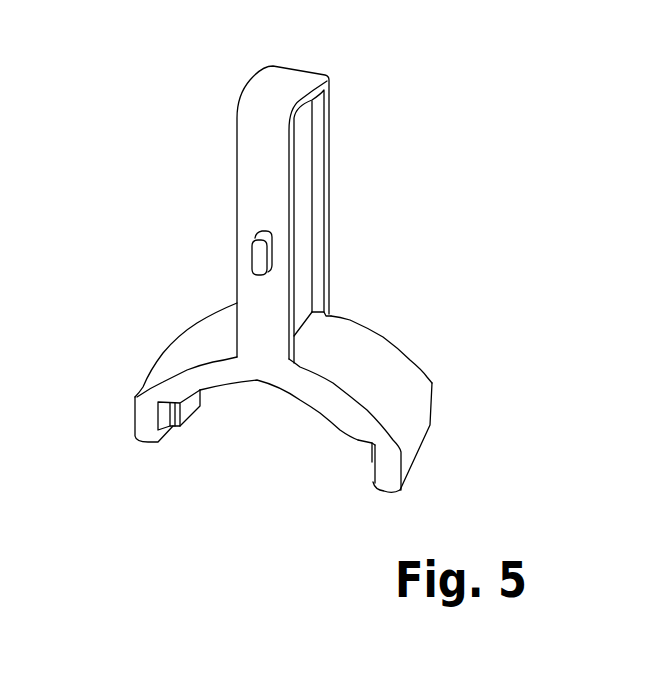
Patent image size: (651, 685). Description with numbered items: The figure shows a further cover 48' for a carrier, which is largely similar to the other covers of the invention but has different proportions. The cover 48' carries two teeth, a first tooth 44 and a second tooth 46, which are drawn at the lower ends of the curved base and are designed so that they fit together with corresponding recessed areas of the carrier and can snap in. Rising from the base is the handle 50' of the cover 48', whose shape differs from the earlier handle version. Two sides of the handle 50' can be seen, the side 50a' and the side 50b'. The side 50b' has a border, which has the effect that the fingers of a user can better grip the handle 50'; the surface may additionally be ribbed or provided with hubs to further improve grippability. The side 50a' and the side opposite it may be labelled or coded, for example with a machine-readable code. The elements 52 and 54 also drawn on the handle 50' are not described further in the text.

The cover 48' is at (243, 276).
The handle 50' is at (268, 214).
The side of the handle 50a' is at (232, 211).
The side of the handle 50b' is at (356, 222).
The slot 52 is at (213, 251).
The groove 54 is at (330, 243).
The first tooth 44 is at (188, 398).
The second tooth 46 is at (372, 448).